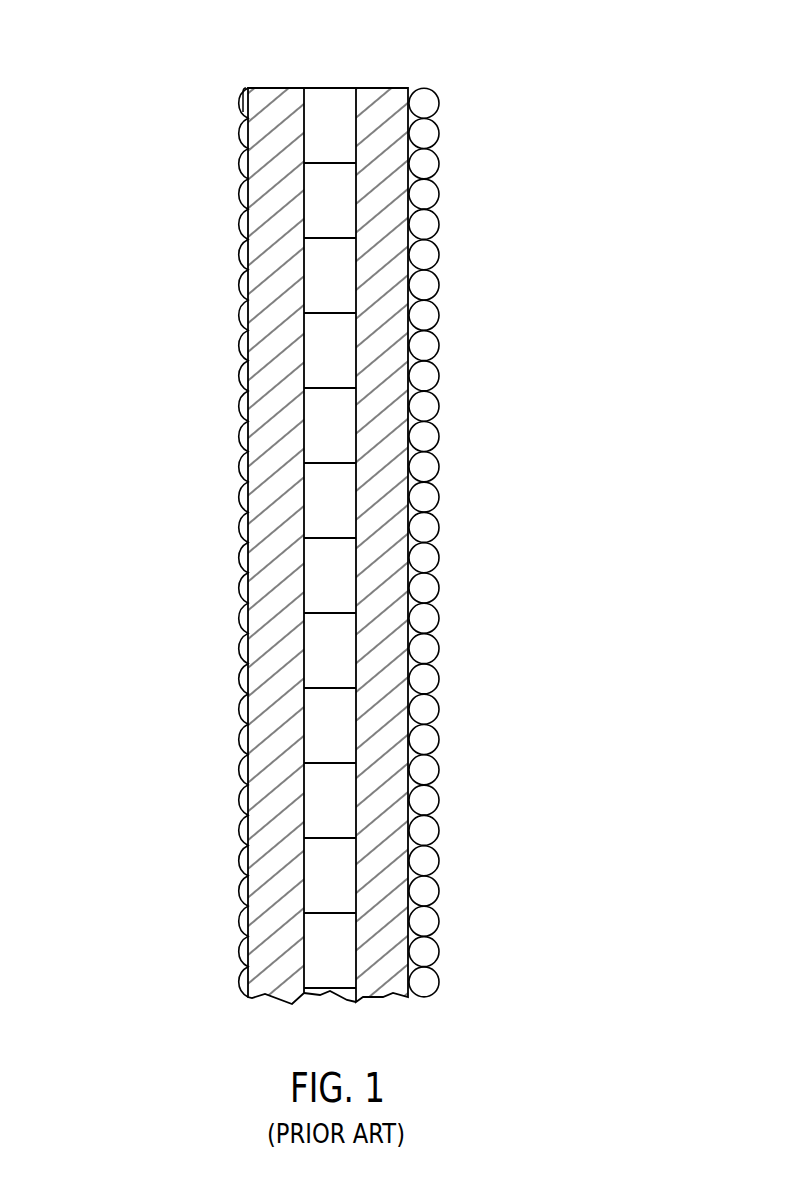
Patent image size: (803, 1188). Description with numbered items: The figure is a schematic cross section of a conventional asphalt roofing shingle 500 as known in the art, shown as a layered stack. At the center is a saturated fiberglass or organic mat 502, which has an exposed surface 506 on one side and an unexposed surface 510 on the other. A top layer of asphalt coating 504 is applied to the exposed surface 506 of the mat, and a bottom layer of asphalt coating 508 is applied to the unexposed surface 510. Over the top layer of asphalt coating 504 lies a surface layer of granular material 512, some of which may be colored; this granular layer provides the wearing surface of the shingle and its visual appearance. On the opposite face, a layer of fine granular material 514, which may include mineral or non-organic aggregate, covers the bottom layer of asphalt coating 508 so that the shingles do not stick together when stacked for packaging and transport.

The conventional asphalt roofing shingle 500 is at (320, 512).
The saturated fiberglass or organic mat 502 is at (330, 108).
The top layer of asphalt coating 504 is at (388, 260).
The exposed surface 506 is at (469, 545).
The bottom layer of asphalt coating 508 is at (260, 260).
The unexposed surface 510 is at (173, 546).
The surface layer of granular material 512 is at (438, 405).
The layer of fine granular material 514 is at (243, 435).